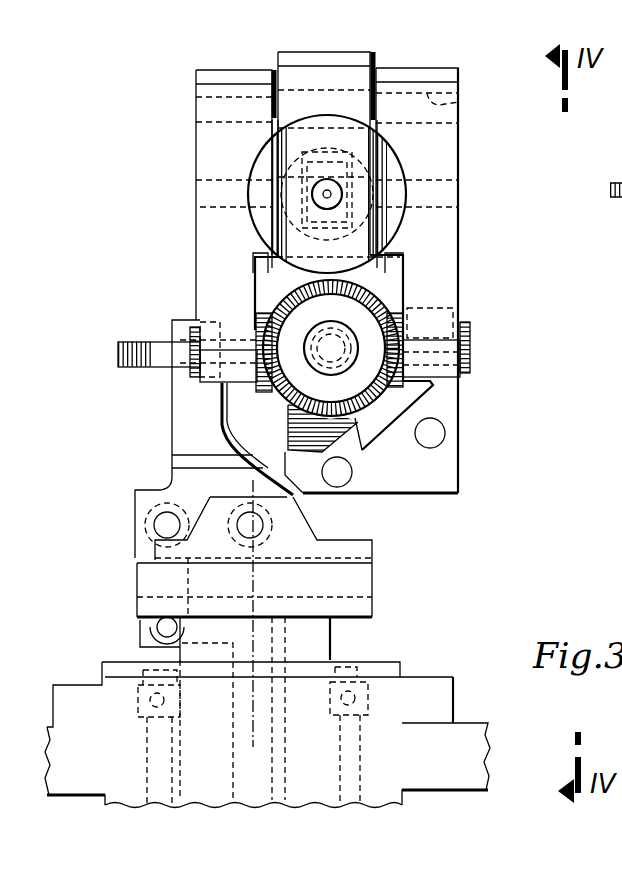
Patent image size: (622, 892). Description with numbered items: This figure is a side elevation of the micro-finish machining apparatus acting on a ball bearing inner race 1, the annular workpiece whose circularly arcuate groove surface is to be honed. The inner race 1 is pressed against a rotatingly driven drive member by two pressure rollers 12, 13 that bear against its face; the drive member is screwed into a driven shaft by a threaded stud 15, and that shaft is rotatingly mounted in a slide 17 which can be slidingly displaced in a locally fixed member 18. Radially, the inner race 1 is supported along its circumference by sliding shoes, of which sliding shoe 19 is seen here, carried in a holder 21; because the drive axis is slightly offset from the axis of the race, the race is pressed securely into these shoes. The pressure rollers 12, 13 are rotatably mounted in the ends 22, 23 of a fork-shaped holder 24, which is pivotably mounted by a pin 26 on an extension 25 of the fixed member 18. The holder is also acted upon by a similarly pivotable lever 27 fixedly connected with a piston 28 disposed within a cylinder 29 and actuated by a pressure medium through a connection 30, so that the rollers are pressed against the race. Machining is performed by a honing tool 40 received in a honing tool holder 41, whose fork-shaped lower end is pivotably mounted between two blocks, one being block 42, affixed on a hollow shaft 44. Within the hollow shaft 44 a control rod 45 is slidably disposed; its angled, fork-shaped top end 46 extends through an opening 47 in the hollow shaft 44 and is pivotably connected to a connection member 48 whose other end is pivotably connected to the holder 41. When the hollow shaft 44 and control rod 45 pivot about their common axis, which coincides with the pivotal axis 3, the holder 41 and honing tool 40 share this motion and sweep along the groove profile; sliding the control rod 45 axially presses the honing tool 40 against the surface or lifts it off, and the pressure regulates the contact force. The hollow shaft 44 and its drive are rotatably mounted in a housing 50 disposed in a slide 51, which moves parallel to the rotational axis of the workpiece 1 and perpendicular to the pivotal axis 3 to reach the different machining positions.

The ball bearing inner race 1 is at (303, 292).
The pivotal axis 3 is at (270, 655).
The pressure roller 12 is at (407, 328).
The pressure roller 13 is at (257, 325).
The threaded stud 15 is at (331, 350).
The slide 17 is at (247, 407).
The locally fixed member 18 is at (325, 49).
The sliding shoe 19 is at (357, 420).
The holder 21 is at (440, 467).
The end of fork-shaped holder 22 is at (442, 293).
The end of fork-shaped holder 23 is at (227, 295).
The fork-shaped holder 24 is at (440, 230).
The extension 25 is at (283, 98).
The pin 26 is at (462, 102).
The lever 27 is at (285, 170).
The piston 28 is at (262, 245).
The cylinder 29 is at (616, 140).
The connection 30 is at (330, 193).
The honing tool 40 is at (118, 352).
The honing tool holder 41 is at (180, 388).
The block 42 is at (345, 557).
The hollow shaft 44 is at (345, 590).
The control rod 45 is at (237, 773).
The angled top end 46 is at (163, 633).
The opening 47 is at (180, 657).
The connection member 48 is at (137, 578).
The housing 50 is at (415, 682).
The slide 51 is at (440, 722).